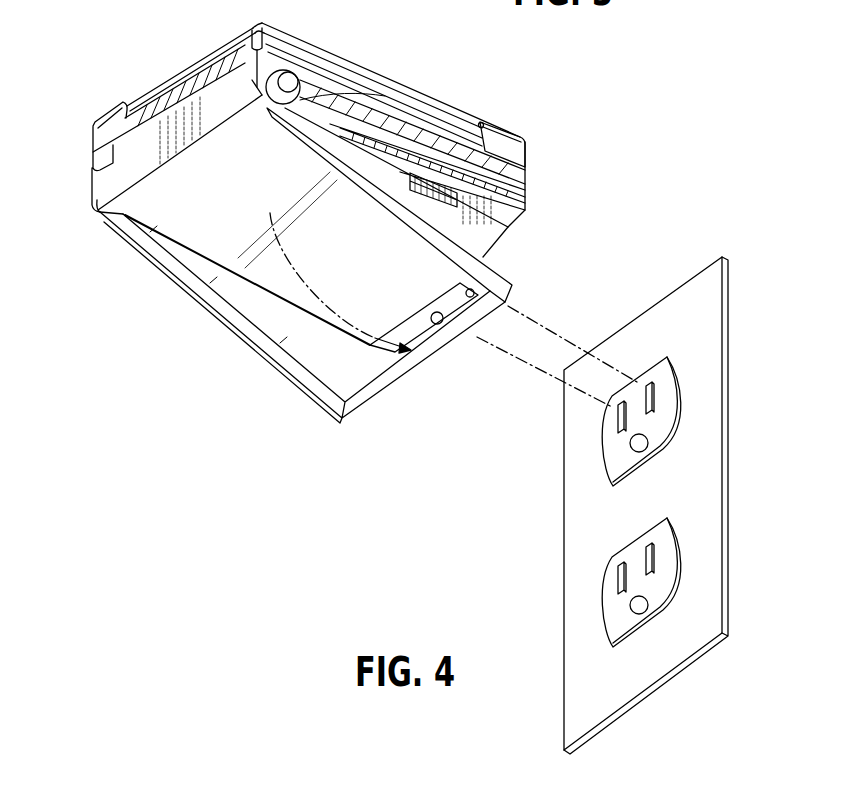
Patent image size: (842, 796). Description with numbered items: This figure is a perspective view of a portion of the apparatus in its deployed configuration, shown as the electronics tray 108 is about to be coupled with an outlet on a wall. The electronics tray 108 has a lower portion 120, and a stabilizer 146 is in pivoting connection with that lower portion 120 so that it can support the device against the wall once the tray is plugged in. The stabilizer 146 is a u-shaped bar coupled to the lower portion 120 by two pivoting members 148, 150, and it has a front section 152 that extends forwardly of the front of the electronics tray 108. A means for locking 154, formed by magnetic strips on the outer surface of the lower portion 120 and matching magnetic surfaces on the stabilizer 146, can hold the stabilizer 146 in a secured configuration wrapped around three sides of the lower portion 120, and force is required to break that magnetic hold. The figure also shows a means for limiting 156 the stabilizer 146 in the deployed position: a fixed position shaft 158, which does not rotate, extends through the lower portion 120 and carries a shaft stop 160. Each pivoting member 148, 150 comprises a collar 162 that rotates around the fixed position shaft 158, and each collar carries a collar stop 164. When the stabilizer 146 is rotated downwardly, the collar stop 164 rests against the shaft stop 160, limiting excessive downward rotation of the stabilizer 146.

The electronics tray 108 is at (358, 256).
The lower portion 120 is at (522, 228).
The stabilizer 146 is at (281, 360).
The pivoting member 148 is at (100, 214).
The pivoting member 150 is at (298, 70).
The front section 152 is at (433, 350).
The means for locking 154 is at (437, 187).
The means for limiting 156 is at (260, 87).
The fixed position shaft 158 is at (252, 36).
The shaft stop 160 is at (300, 77).
The collar 162 is at (310, 80).
The collar stop 164 is at (303, 102).